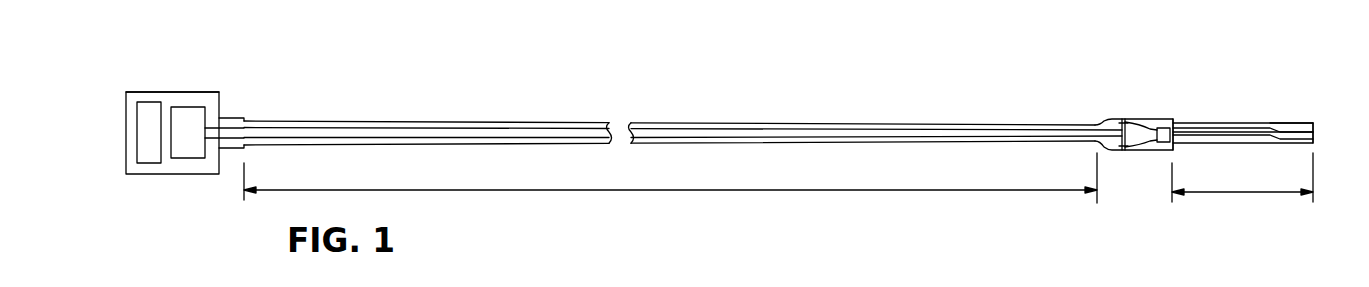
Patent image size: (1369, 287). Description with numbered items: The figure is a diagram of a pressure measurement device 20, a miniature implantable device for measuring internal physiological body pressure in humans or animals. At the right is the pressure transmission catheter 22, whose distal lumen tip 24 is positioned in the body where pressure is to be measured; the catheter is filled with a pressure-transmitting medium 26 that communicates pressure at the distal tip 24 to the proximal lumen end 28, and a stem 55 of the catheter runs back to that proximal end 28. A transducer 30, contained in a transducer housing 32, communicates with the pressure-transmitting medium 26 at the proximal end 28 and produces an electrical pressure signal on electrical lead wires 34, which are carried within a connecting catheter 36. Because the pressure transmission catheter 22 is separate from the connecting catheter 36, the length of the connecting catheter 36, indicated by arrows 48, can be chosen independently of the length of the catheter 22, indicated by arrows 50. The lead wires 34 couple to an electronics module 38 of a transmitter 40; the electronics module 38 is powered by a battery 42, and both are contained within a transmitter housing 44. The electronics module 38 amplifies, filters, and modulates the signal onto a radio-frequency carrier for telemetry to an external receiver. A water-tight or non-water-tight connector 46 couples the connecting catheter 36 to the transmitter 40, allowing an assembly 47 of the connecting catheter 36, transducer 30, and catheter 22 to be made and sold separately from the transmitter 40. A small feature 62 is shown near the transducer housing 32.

The pressure measurement device 20 is at (722, 78).
The pressure transmission catheter 22 is at (1294, 96).
The distal lumen tip 24 is at (1313, 127).
The pressure-transmitting medium 26 is at (1248, 133).
The proximal lumen end 28 is at (1190, 147).
The transducer 30 is at (1162, 150).
The transducer housing 32 is at (1163, 100).
The electrical lead wires 34 is at (1037, 137).
The connecting catheter 36 is at (967, 123).
The electronics module 38 is at (188, 158).
The transmitter 40 is at (104, 75).
The battery 42 is at (148, 163).
The transmitter housing 44 is at (175, 78).
The connector 46 is at (234, 116).
The assembly 47 is at (911, 223).
The arrows indicating length of connecting catheter 48 is at (697, 192).
The arrows indicating length of PTC 50 is at (1243, 195).
The stem 55 is at (1224, 105).
The junction 62 is at (1177, 127).